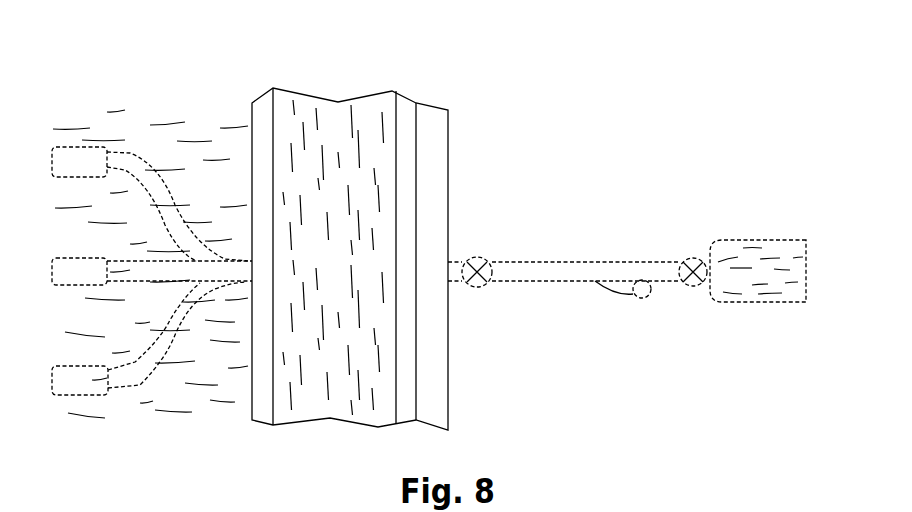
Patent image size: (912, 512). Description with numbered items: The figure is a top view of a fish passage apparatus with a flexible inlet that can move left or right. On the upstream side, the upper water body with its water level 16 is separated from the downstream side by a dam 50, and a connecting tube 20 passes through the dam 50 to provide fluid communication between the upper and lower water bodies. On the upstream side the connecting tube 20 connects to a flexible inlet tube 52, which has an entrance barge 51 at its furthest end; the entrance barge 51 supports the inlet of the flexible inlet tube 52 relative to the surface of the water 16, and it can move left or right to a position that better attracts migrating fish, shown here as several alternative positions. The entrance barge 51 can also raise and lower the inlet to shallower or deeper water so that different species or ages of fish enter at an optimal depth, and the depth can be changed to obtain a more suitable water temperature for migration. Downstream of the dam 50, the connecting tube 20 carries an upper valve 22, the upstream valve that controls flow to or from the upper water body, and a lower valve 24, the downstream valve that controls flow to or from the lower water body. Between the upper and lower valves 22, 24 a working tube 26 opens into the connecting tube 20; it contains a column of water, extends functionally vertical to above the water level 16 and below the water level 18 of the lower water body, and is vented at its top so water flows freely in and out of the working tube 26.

The water level 16 is at (190, 155).
The water level 18 is at (768, 248).
The connecting tube 20 is at (593, 270).
The upper valve 22 is at (478, 260).
The lower valve 24 is at (694, 260).
The working tube 26 is at (650, 298).
The dam 50 is at (367, 95).
The entrance barge 51 is at (80, 155).
The flexible inlet tube 52 is at (140, 272).